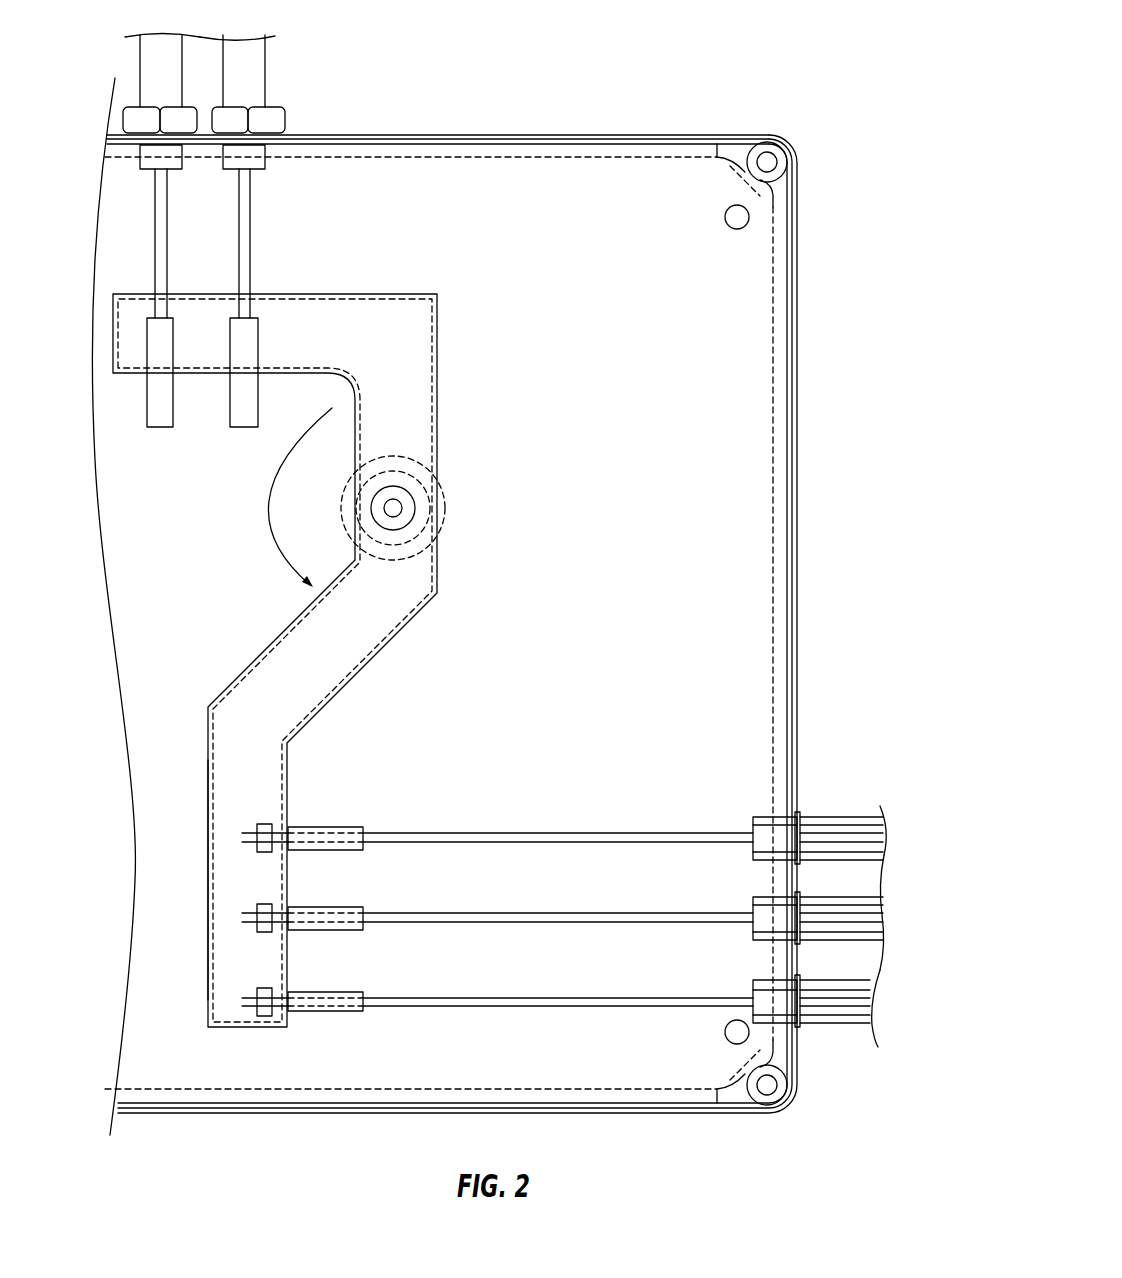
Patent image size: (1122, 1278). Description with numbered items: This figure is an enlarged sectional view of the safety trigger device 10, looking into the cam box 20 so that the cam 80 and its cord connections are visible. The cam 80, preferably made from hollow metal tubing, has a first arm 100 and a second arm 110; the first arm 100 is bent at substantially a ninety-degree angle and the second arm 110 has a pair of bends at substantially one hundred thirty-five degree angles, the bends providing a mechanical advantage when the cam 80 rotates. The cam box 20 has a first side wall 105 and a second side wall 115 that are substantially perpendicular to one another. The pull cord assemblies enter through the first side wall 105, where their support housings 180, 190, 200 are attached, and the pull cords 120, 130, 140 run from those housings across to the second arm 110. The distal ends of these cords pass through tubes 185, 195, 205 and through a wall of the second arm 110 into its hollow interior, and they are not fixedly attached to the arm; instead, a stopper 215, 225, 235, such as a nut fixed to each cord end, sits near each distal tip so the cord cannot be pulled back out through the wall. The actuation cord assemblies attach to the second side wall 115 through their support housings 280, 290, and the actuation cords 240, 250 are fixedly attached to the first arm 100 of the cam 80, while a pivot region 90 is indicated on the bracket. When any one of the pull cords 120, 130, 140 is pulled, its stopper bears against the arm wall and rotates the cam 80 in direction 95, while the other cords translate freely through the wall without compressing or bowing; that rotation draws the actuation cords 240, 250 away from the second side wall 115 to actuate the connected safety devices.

The safety trigger device 10 is at (742, 75).
The cam box 20 is at (623, 259).
The cam 80 is at (484, 348).
The pivot hole 90 is at (457, 483).
The direction 95 is at (270, 512).
The first arm 100 is at (305, 273).
The first side wall 105 is at (790, 495).
The second arm 110 is at (190, 729).
The second side wall 115 is at (498, 143).
The cord 120 is at (648, 833).
The cord 130 is at (648, 913).
The cord 140 is at (650, 995).
The support housing 180 is at (835, 820).
The tube 185 is at (360, 828).
The support housing 190 is at (865, 900).
The tube 195 is at (360, 908).
The support housing 200 is at (860, 985).
The tube 205 is at (360, 992).
The stopper 215 is at (262, 823).
The stopper 225 is at (262, 903).
The stopper 235 is at (262, 987).
The cord 240 is at (162, 248).
The cord 250 is at (245, 213).
The support housing 280 is at (175, 88).
The support housing 290 is at (258, 97).